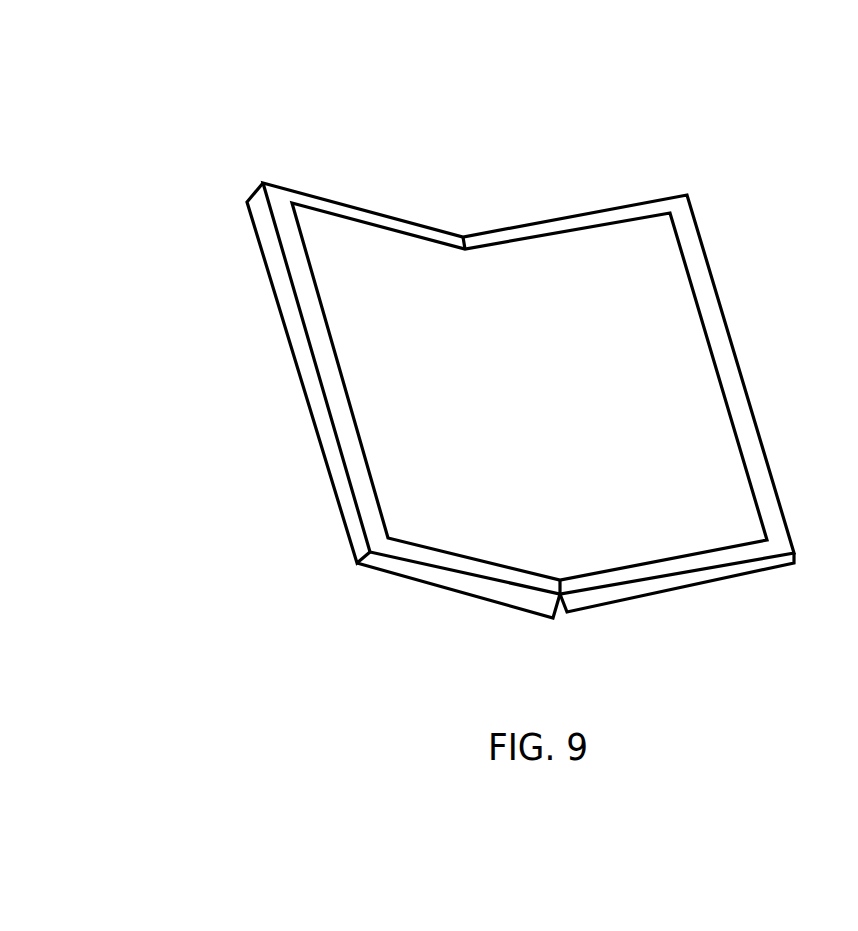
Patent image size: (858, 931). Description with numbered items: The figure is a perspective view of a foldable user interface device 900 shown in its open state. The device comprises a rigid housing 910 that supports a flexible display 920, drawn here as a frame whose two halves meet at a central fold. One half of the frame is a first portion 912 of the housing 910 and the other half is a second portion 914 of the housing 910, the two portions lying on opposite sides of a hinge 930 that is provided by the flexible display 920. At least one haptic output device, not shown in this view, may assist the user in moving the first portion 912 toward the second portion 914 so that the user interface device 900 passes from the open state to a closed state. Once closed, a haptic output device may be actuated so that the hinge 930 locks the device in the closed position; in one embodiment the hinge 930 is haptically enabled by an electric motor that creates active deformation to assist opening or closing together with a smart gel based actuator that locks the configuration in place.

The user interface device 900 is at (300, 172).
The rigid housing 910 is at (308, 383).
The first portion 912 is at (448, 597).
The second portion 914 is at (677, 594).
The flexible display 920 is at (557, 285).
The hinge 930 is at (466, 229).